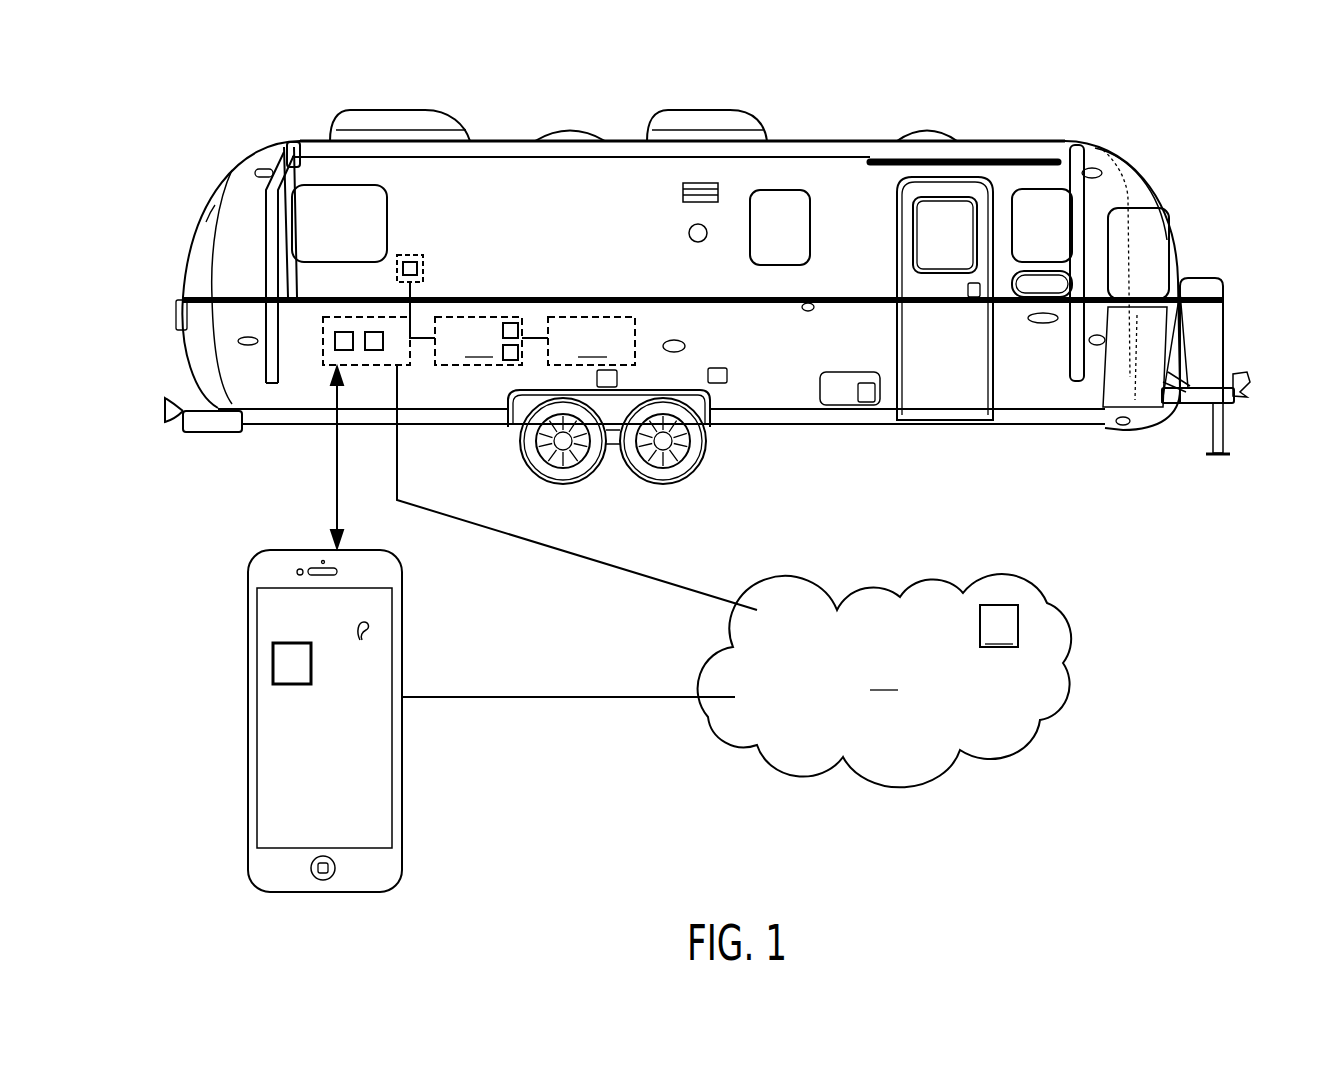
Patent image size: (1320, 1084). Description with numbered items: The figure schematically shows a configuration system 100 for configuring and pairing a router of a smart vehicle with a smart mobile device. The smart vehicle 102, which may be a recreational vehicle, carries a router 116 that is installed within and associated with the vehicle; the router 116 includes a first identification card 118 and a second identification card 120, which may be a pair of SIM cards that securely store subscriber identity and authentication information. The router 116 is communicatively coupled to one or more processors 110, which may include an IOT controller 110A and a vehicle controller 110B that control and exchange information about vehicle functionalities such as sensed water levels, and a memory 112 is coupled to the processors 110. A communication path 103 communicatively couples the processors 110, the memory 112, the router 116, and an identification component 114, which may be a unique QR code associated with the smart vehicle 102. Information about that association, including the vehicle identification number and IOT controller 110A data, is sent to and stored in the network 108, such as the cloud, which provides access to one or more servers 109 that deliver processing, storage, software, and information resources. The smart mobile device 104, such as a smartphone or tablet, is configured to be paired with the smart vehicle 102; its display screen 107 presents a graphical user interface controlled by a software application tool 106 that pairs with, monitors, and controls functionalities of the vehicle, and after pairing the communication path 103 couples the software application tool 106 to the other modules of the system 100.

The configuration system 100 is at (707, 264).
The smart vehicle 102 is at (998, 128).
The communication path 103 is at (533, 337).
The smart mobile device 104 is at (301, 721).
The software application tool 106 is at (272, 665).
The display screen 107 is at (360, 630).
The network 108 is at (885, 680).
The servers 109 is at (999, 626).
The processors 110 is at (477, 325).
The IOT controller 110A is at (506, 323).
The vehicle controller 110B is at (507, 362).
The memory 112 is at (591, 341).
The identification component 114 is at (425, 262).
The router 116 is at (331, 366).
The first identification card 118 is at (345, 330).
The second identification card 120 is at (375, 330).